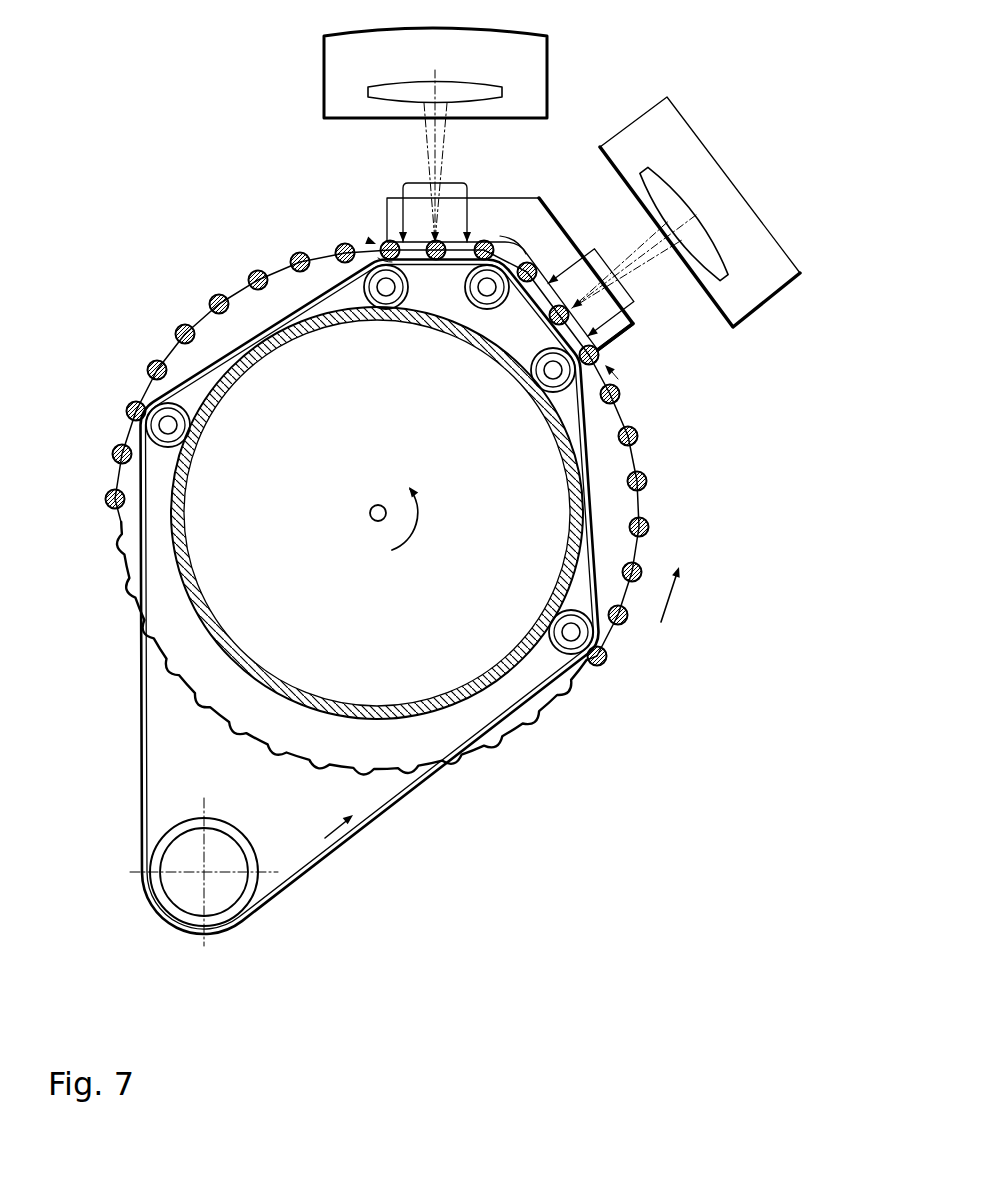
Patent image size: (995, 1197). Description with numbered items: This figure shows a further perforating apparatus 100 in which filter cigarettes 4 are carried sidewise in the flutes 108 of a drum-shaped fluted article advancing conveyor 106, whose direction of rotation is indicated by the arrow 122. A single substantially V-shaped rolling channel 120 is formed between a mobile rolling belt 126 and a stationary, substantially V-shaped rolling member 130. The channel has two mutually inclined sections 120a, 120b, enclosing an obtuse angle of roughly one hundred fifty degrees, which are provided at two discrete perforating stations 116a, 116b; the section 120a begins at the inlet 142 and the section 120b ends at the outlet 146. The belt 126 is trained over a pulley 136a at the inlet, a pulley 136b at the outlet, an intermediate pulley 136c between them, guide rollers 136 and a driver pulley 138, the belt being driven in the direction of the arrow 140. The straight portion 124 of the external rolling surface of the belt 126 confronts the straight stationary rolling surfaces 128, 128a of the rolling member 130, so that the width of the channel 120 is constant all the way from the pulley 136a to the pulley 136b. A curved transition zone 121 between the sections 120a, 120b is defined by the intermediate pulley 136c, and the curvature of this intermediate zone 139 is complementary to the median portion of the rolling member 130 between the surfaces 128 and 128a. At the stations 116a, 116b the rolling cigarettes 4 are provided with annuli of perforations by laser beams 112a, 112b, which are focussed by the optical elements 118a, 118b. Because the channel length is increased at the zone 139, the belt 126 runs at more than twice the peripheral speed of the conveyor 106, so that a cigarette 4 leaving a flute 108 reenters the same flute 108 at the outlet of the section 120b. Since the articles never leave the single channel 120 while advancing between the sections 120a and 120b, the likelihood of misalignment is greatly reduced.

The perforating apparatus 100 is at (126, 174).
The filter cigarette 4 is at (650, 533).
The fluted article advancing conveyor 106 is at (543, 705).
The flute 108 is at (497, 742).
The laser beam 112a is at (722, 270).
The laser beam 112b is at (410, 118).
The perforating station 116a is at (612, 272).
The perforating station 116b is at (422, 183).
The optical element 118a is at (778, 289).
The optical element 118b is at (357, 92).
The rolling channel 120 is at (500, 252).
The channel section 120a is at (598, 350).
The channel section 120b is at (336, 252).
The curved transition zone 121 is at (525, 243).
The arrow 122 is at (667, 615).
The straight portion of belt rolling surface 124 is at (604, 340).
The rolling belt 126 is at (302, 870).
The rolling surface 128 is at (543, 307).
The rolling surface 128a is at (381, 250).
The rolling member 130 is at (393, 213).
The guide pulley 136 is at (150, 405).
The pulley 136a is at (572, 388).
The pulley 136b is at (365, 287).
The intermediate pulley 136c is at (488, 297).
The driver pulley 138 is at (240, 925).
The intermediate zone 139 is at (575, 246).
The arrow 140 is at (352, 833).
The inlet 142 is at (612, 372).
The outlet 146 is at (371, 243).